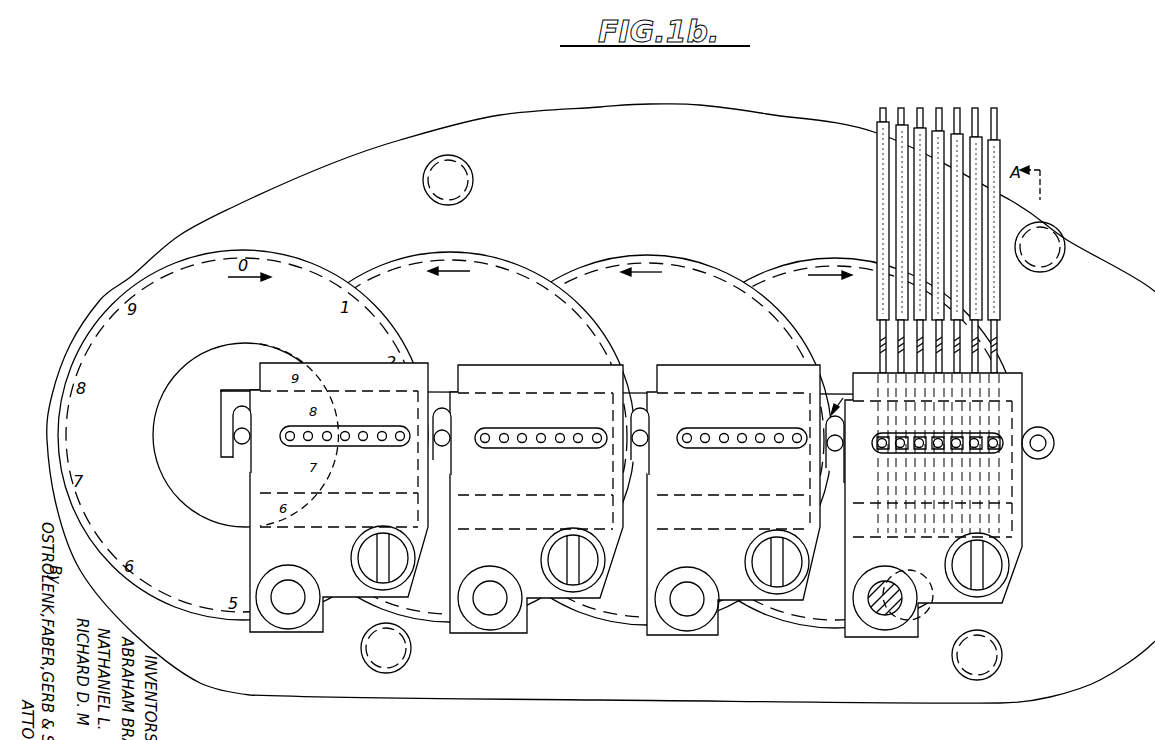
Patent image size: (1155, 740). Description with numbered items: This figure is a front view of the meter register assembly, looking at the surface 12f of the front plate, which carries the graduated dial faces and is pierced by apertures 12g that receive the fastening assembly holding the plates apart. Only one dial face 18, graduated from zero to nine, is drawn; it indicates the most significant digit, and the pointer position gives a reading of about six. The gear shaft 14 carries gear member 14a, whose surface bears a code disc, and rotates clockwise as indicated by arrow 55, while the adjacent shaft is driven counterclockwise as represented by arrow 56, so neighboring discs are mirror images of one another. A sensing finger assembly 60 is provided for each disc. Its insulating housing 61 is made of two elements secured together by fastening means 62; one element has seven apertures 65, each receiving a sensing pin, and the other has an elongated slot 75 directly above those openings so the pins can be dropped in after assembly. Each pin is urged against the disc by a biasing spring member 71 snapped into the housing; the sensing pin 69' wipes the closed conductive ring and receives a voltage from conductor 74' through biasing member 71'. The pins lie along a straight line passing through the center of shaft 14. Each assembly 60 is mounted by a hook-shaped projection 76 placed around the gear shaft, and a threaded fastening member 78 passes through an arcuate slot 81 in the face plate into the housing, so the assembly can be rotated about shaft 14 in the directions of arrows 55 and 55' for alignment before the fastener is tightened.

The surface of the front plate 12f is at (416, 140).
The apertures 12g is at (1058, 264).
The gear shaft 14 is at (840, 456).
The gear member 14a is at (838, 259).
The dial face 18 is at (244, 347).
The arrow 55 is at (830, 286).
The arrow 55' is at (837, 396).
The arrow 56 is at (640, 278).
The sensing finger assembly 60 is at (666, 501).
The housing 61 is at (1023, 556).
The fastening means 62 is at (574, 598).
The apertures 65 is at (687, 446).
The sensing pin 69' is at (926, 471).
The biasing spring member 71 is at (977, 453).
The biasing member 71' is at (918, 346).
The conductor 74' is at (914, 214).
The elongated slot 75 is at (997, 450).
The hook-shaped projection 76 is at (630, 392).
The fastening member 78 is at (288, 629).
The arcuate slot 81 is at (842, 613).